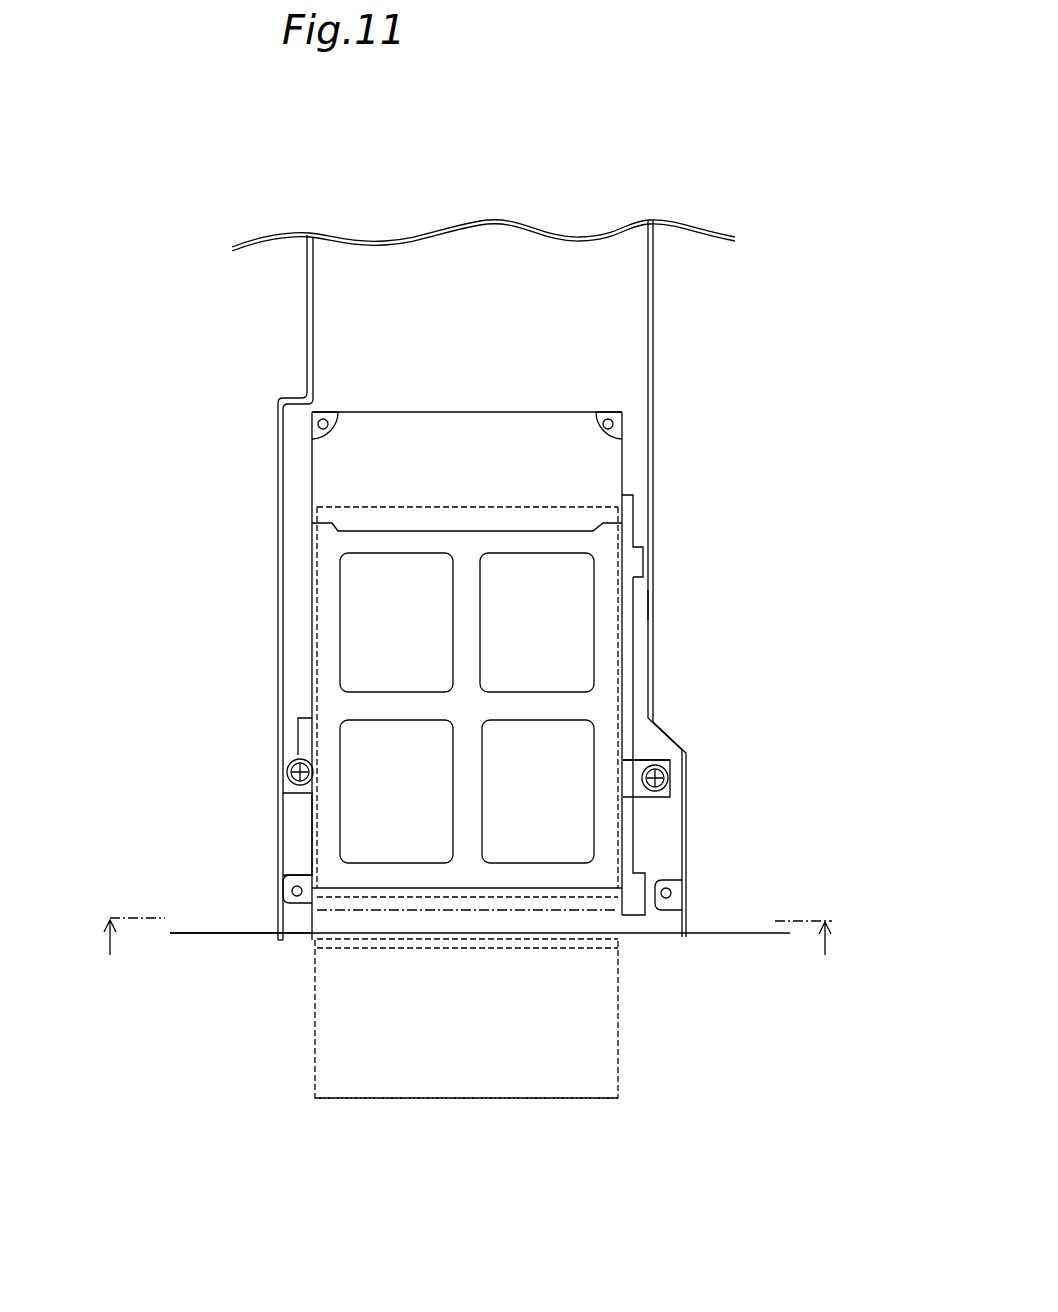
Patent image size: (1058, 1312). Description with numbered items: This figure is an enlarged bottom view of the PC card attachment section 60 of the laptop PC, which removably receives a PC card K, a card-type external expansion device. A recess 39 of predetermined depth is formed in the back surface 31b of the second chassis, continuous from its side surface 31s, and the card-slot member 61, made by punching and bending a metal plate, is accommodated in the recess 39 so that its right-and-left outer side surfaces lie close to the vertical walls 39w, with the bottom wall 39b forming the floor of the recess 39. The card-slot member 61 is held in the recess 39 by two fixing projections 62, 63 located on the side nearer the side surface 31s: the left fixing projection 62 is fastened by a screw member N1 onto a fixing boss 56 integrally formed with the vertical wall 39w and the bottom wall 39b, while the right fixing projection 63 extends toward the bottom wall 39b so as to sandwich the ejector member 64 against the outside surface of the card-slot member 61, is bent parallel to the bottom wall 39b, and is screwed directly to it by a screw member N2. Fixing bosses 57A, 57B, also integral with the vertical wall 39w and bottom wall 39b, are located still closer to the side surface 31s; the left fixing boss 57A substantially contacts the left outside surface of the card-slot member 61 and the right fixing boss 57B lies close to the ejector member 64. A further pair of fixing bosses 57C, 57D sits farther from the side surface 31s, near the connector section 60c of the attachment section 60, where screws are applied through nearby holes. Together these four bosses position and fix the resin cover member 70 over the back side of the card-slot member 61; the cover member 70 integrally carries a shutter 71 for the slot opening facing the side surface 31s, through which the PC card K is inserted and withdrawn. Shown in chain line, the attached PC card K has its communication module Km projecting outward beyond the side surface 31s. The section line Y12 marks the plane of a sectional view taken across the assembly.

The PC card attachment section 60 is at (532, 385).
The connector section 60c is at (417, 413).
The recess 39 is at (617, 383).
The vertical wall 39w is at (283, 478).
The bottom wall 39b is at (642, 603).
The card-slot member 61 is at (325, 598).
The cover member 70 is at (653, 537).
The ejector member 64 is at (637, 660).
The fixing boss 57A is at (283, 876).
The fixing boss 57B is at (668, 880).
The fixing boss 57C is at (313, 430).
The fixing boss 57D is at (622, 430).
The screw member N1 is at (298, 745).
The screw member N2 is at (658, 760).
The fixing projection 62 is at (288, 764).
The fixing projection 63 is at (670, 772).
The fixing boss 56 is at (282, 815).
The shutter 71 is at (610, 923).
The section line Y12 is at (464, 931).
The back surface 31b is at (207, 917).
The side surface 31s is at (712, 942).
The PC card K is at (315, 1030).
The communication module Km is at (463, 1085).